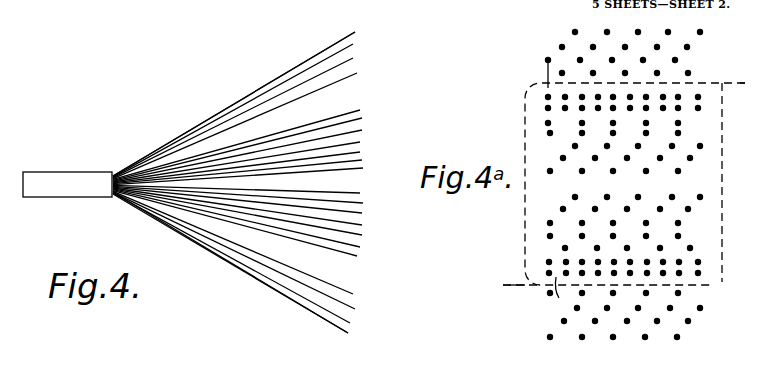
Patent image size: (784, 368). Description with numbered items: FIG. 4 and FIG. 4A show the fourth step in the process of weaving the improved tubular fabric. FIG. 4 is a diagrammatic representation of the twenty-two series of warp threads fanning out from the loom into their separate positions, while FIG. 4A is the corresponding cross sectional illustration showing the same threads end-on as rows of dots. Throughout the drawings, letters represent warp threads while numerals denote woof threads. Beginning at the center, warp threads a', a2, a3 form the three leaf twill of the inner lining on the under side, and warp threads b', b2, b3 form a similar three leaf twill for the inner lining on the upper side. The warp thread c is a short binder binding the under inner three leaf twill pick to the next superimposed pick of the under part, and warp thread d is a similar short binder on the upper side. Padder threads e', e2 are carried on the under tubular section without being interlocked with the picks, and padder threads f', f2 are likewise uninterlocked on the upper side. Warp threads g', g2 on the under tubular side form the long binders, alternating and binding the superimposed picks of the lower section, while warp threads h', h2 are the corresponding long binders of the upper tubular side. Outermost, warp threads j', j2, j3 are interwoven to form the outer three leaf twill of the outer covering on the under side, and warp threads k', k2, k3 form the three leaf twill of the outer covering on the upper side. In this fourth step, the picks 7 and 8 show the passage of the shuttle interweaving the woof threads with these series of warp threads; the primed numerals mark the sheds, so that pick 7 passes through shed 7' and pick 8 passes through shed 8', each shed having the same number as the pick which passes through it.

In FIG. 4, the warp thread k' is at (259, 98).
In FIG. 4A, the warp thread k' is at (554, 30).
In FIG. 4, the warp thread k2 is at (353, 44).
In FIG. 4A, the warp thread k2 is at (559, 47).
In FIG. 4, the warp thread k3 is at (353, 58).
In FIG. 4A, the warp thread k3 is at (545, 62).
In FIG. 4, the long binder warp thread h2 is at (357, 73).
In FIG. 4A, the long binder warp thread h2 is at (691, 71).
In FIG. 4, the padder thread f2 is at (360, 110).
In FIG. 4A, the padder thread f2 is at (701, 97).
In FIG. 4, the padder thread f' is at (263, 136).
In FIG. 4A, the padder thread f' is at (719, 116).
In FIG. 4, the long binder warp thread h' is at (267, 145).
In FIG. 4A, the long binder warp thread h' is at (695, 128).
In FIG. 4, the short binder warp thread d is at (360, 142).
In FIG. 4A, the short binder warp thread d is at (547, 133).
In FIG. 4, the warp thread b' is at (281, 158).
In FIG. 4A, the warp thread b' is at (722, 145).
In FIG. 4, the warp thread b2 is at (362, 160).
In FIG. 4A, the warp thread b2 is at (693, 158).
In FIG. 4, the warp thread b3 is at (363, 168).
In FIG. 4A, the warp thread b3 is at (681, 171).
In FIG. 4, the warp thread a' is at (259, 191).
In FIG. 4A, the warp thread a' is at (695, 223).
In FIG. 4, the warp thread a2 is at (363, 203).
In FIG. 4A, the warp thread a2 is at (691, 209).
In FIG. 4, the warp thread a3 is at (362, 213).
In FIG. 4A, the warp thread a3 is at (703, 196).
In FIG. 4, the short binder warp thread c is at (362, 225).
In FIG. 4A, the short binder warp thread c is at (681, 236).
In FIG. 4, the long binder warp thread g' is at (283, 217).
In FIG. 4A, the long binder warp thread g' is at (719, 248).
In FIG. 4, the padder thread e' is at (287, 221).
In FIG. 4A, the padder thread e' is at (721, 262).
In FIG. 4, the padder thread e2 is at (357, 256).
In FIG. 4A, the padder thread e2 is at (701, 273).
In FIG. 4, the long binder warp thread g2 is at (353, 294).
In FIG. 4A, the long binder warp thread g2 is at (681, 293).
In FIG. 4, the warp thread j' is at (251, 256).
In FIG. 4A, the warp thread j' is at (721, 315).
In FIG. 4, the warp thread j2 is at (350, 323).
In FIG. 4A, the warp thread j2 is at (691, 322).
In FIG. 4, the warp thread j3 is at (348, 333).
In FIG. 4A, the warp thread j3 is at (680, 338).
In FIG. 4, the shed 8' is at (234, 104).
In FIG. 4, the shed 7' is at (232, 263).
In FIG. 4A, the pick 8 is at (748, 69).
In FIG. 4A, the pick 7 is at (506, 296).